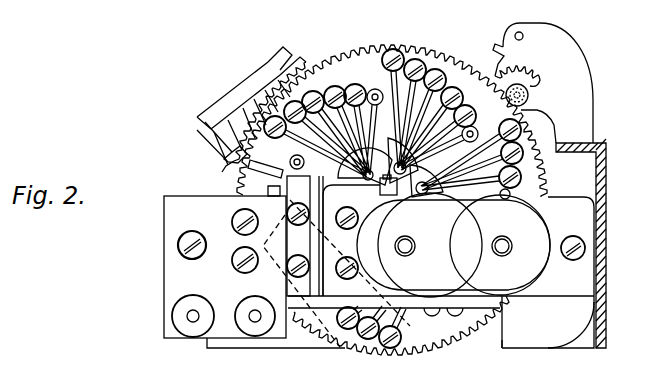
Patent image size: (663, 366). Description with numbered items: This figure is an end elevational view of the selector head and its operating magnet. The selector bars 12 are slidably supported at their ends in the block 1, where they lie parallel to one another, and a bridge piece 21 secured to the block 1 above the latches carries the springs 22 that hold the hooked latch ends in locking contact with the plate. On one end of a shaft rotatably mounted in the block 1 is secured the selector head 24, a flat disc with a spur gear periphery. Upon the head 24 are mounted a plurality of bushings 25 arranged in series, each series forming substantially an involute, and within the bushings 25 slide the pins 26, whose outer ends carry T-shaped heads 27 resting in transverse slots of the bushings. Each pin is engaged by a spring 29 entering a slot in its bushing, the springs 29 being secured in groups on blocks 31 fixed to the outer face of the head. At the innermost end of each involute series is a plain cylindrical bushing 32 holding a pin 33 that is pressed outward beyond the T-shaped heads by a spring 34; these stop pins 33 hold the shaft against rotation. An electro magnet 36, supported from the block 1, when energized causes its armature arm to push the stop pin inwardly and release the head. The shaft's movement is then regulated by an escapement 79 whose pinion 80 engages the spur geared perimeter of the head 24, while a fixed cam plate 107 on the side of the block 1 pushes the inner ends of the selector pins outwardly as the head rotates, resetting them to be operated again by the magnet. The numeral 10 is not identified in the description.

The block 1 is at (495, 336).
The side plate 10 is at (254, 281).
The selector bars 12 is at (285, 260).
The bridge piece 21 is at (240, 93).
The springs 22 is at (214, 128).
The selector head 24 is at (452, 58).
The bushings 25 is at (404, 57).
The pins 26 is at (394, 50).
The T-shaped heads 27 is at (385, 60).
The spring 29 is at (393, 90).
The blocks 31 is at (445, 200).
The plain cylindrical bushing 32 is at (471, 127).
The pin 33 is at (480, 136).
The spring 34 is at (458, 150).
The electro magnet 36 is at (513, 290).
The escapement 79 is at (497, 67).
The pinion 80 is at (530, 95).
The fixed cam plate 107 is at (413, 326).